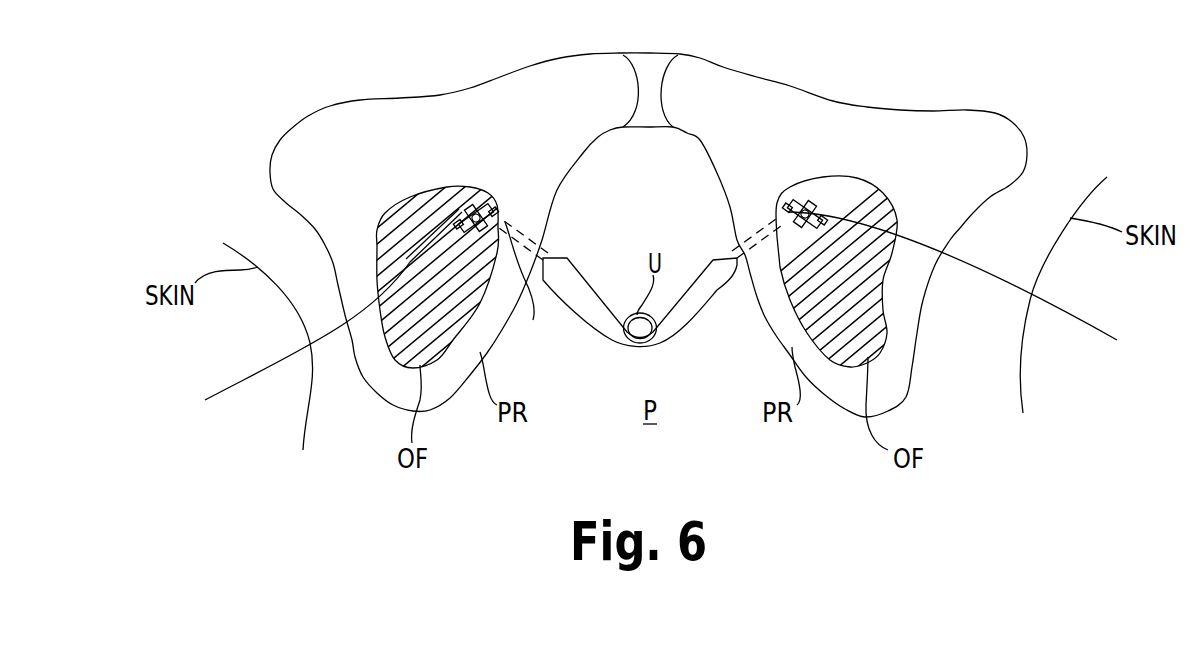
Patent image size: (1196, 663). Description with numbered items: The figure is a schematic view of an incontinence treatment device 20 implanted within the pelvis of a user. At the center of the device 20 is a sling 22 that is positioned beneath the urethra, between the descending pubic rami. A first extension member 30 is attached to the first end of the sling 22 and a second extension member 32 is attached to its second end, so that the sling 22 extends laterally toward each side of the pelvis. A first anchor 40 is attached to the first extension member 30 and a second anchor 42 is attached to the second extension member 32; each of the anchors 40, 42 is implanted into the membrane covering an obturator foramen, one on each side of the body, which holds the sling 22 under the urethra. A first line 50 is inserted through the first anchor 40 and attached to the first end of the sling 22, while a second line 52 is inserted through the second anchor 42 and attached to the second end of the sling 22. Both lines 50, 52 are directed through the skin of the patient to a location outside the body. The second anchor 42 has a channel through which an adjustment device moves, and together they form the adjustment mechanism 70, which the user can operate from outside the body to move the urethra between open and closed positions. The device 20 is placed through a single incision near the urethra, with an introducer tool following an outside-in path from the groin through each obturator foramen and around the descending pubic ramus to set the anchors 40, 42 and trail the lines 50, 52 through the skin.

The device 20 is at (641, 228).
The sling 22 is at (587, 313).
The first extension member 30 is at (517, 232).
The second extension member 32 is at (750, 232).
The first anchor 40 is at (495, 207).
The second anchor 42 is at (805, 186).
The first line 50 is at (250, 380).
The second line 52 is at (1077, 322).
The adjustment mechanism 70 is at (785, 122).